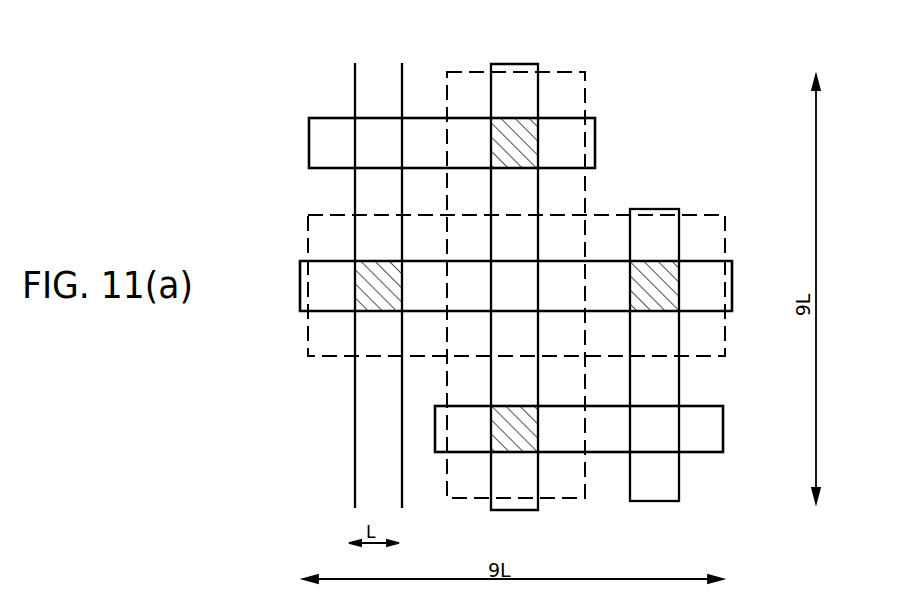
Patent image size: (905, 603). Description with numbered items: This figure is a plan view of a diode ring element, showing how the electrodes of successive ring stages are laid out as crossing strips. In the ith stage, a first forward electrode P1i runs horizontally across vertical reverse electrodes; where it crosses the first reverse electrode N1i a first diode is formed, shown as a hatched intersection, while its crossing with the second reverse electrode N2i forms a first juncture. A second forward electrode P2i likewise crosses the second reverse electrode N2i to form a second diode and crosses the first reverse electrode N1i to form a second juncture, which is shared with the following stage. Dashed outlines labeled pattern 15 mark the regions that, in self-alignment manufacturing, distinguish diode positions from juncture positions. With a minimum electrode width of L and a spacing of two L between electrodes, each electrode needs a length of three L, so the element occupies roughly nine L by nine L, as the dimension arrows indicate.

The pattern 15 is at (578, 72).
The second reverse electrode N2i is at (378, 274).
The first reverse electrode N1i is at (514, 165).
The first forward electrode P1i is at (471, 143).
The second forward electrode P2i is at (387, 286).